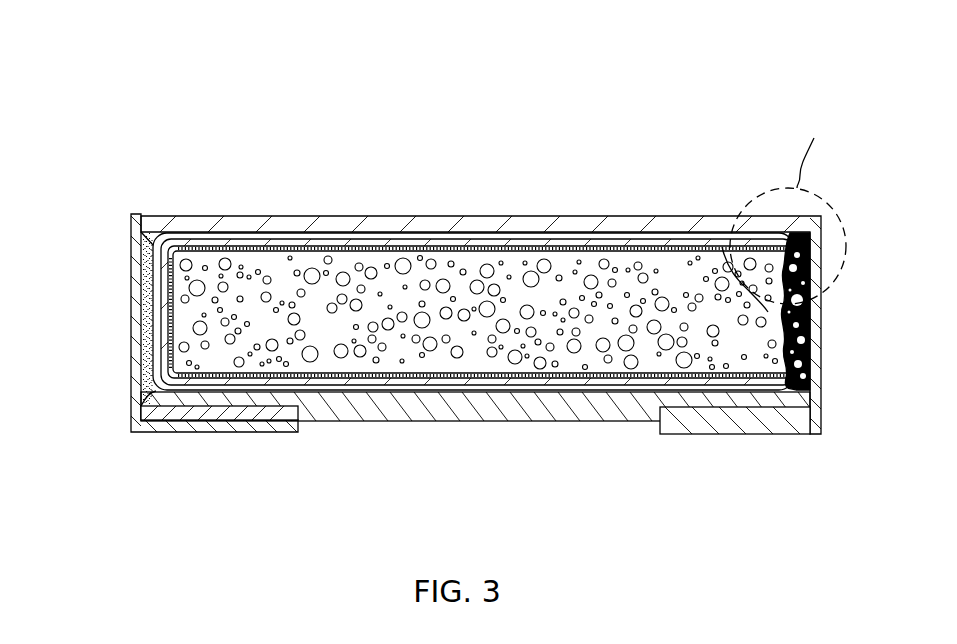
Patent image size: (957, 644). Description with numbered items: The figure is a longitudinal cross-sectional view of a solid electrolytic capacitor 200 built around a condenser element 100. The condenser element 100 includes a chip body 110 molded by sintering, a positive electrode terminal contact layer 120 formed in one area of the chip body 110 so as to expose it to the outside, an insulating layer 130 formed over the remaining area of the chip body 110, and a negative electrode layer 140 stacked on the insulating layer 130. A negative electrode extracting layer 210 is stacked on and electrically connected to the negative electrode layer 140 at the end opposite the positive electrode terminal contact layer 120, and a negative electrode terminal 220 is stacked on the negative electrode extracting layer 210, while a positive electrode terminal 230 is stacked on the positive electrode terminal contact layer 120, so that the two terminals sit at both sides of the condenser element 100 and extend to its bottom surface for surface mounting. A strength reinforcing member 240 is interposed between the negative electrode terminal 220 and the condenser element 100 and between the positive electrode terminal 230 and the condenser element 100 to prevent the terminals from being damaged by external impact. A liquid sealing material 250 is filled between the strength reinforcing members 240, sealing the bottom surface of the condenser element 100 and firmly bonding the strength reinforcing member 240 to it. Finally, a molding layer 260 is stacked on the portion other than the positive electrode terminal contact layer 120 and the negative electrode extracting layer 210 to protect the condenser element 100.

The solid electrolytic capacitor 200 is at (319, 33).
The condenser element 100 is at (410, 112).
The chip body 110 is at (598, 265).
The positive electrode terminal contact layer 120 is at (797, 234).
The insulating layer 130 is at (423, 253).
The negative electrode layer 140 is at (525, 254).
The negative electrode extracting layer 210 is at (148, 307).
The negative electrode terminal 220 is at (134, 367).
The positive electrode terminal 230 is at (817, 372).
The strength reinforcing member 240 is at (210, 415).
The liquid sealing material 250 is at (457, 417).
The molding layer 260 is at (260, 222).